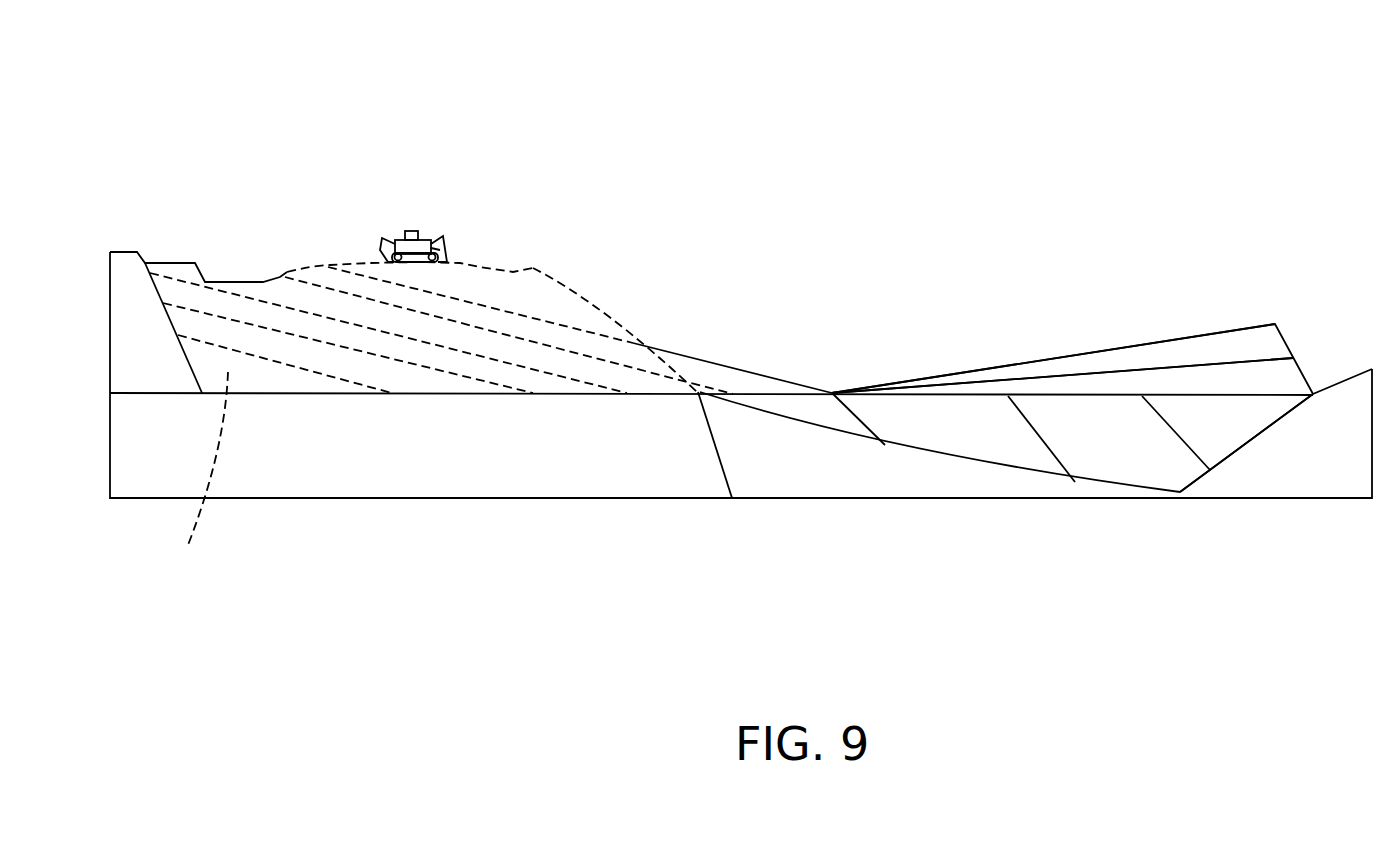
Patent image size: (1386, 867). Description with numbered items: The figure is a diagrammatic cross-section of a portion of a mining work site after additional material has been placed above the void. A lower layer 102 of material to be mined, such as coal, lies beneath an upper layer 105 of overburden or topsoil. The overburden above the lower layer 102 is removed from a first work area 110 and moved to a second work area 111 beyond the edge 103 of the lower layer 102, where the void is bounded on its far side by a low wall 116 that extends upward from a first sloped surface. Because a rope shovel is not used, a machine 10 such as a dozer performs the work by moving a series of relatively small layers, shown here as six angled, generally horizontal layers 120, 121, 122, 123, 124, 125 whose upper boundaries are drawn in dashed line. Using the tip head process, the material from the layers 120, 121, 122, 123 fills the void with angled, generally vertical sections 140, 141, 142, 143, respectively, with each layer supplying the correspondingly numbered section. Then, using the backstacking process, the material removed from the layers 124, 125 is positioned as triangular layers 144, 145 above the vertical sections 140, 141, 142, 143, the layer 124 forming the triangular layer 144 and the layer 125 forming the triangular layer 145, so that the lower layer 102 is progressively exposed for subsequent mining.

The machine 10 is at (427, 225).
The lower layer 102 is at (470, 445).
The edge 103 is at (715, 443).
The upper layer 105 is at (357, 250).
The first work area 110 is at (619, 252).
The second work area 111 is at (950, 265).
The low wall 116 is at (1208, 463).
The layer 120 is at (518, 290).
The layer 121 is at (328, 283).
The layer 122 is at (295, 295).
The layer 123 is at (232, 305).
The layer 124 is at (200, 327).
The layer 125 is at (194, 475).
The section 140 is at (840, 422).
The section 141 is at (965, 438).
The section 142 is at (1102, 442).
The section 143 is at (1253, 412).
The triangular layer 144 is at (1232, 383).
The triangular layer 145 is at (1168, 357).